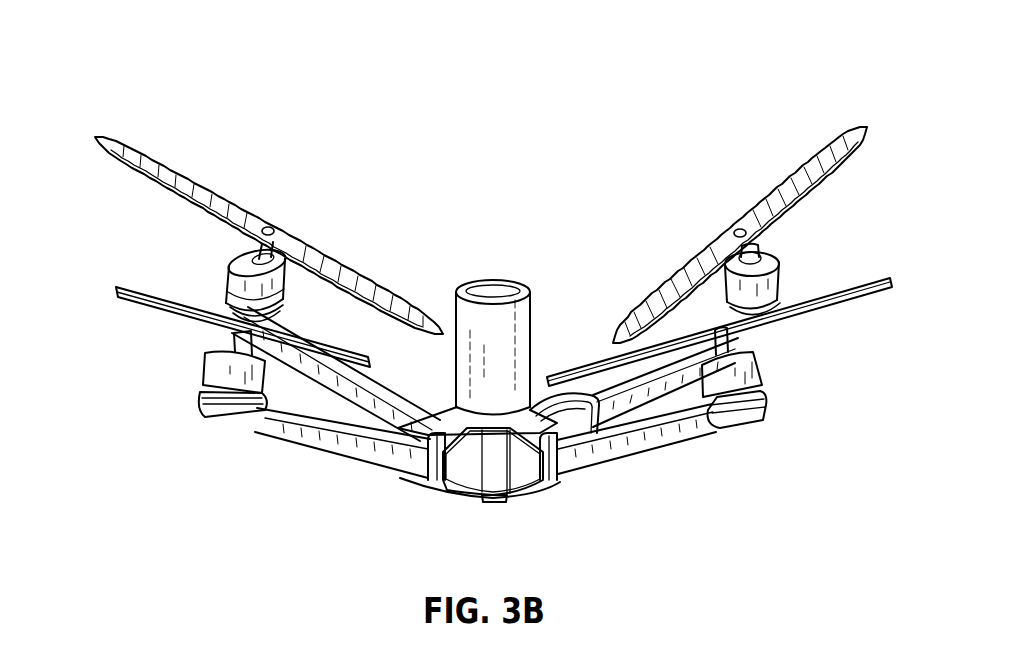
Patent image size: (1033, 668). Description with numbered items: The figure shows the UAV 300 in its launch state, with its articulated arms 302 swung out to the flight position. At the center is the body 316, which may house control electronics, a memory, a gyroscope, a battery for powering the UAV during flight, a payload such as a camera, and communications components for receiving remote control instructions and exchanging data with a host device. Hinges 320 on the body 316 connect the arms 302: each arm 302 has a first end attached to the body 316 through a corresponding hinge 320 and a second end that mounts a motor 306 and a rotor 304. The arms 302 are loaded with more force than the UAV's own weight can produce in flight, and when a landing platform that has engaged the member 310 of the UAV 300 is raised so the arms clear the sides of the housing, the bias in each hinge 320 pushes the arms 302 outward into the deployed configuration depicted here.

The UAV 300 is at (178, 62).
The articulated arms 302 is at (752, 333).
The rotor 304 is at (826, 158).
The motor 306 is at (780, 283).
The member 310 is at (496, 504).
The body 316 is at (497, 283).
The hinges 320 is at (437, 486).